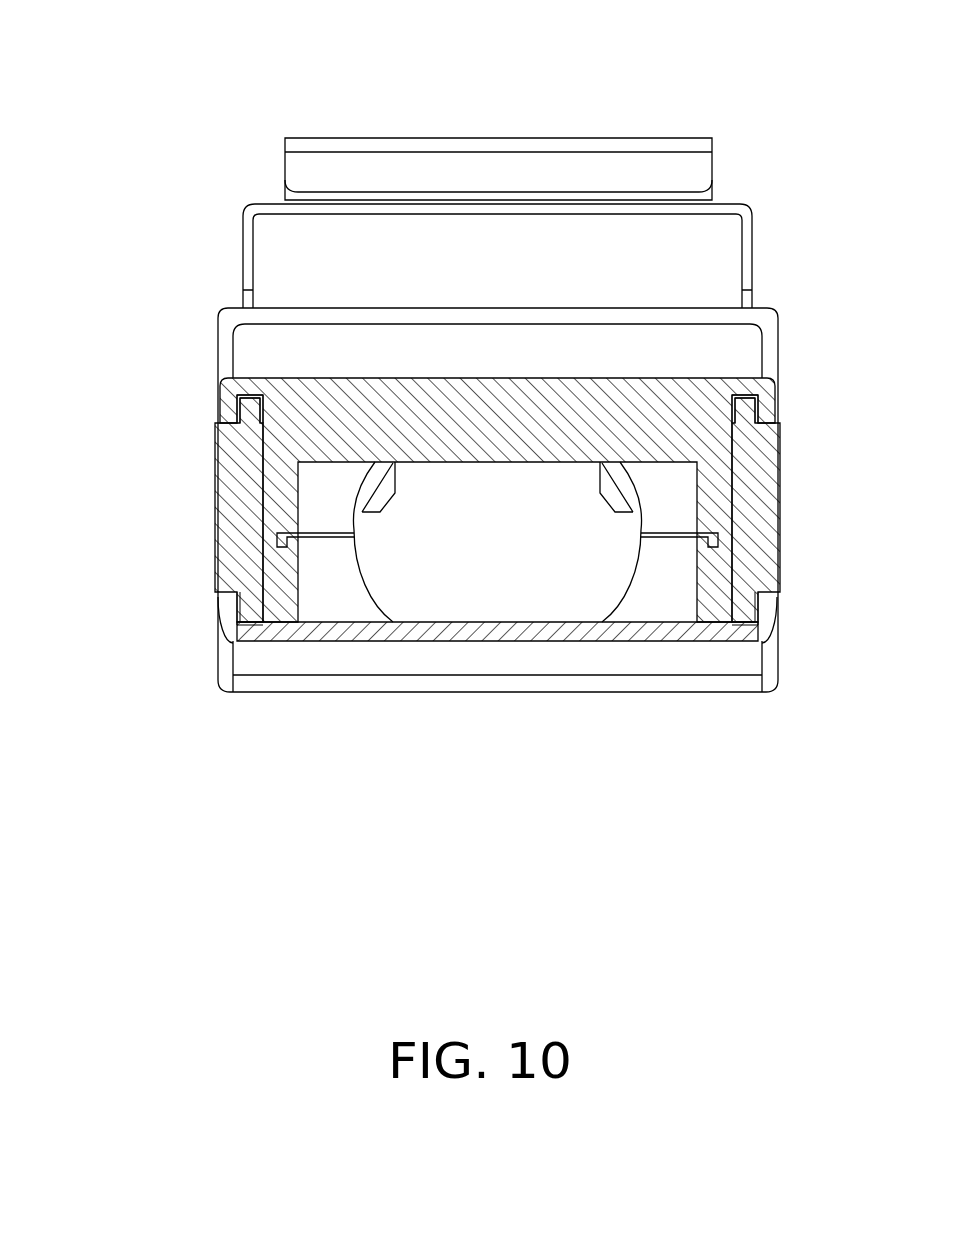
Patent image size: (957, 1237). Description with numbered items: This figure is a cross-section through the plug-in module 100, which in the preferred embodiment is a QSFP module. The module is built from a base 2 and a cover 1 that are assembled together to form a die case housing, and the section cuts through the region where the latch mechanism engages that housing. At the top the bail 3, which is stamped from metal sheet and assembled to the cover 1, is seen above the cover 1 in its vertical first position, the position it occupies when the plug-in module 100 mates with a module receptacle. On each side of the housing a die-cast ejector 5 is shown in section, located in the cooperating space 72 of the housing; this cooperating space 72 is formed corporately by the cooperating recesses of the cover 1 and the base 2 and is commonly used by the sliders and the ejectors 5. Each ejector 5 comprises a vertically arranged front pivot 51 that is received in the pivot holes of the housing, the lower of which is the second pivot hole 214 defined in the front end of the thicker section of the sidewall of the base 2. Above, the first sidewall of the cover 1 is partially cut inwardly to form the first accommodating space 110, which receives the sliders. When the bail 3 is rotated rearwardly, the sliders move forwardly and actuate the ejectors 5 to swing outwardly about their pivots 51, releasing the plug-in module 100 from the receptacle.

The plug-in module 100 is at (501, 33).
The bail 3 is at (610, 175).
The cover 1 is at (585, 400).
The base 2 is at (608, 630).
The ejector 5 is at (757, 512).
The front pivot 51 is at (747, 413).
The first accommodating space 110 is at (247, 392).
The second pivot hole 214 is at (252, 618).
The cooperating space 72 is at (117, 288).